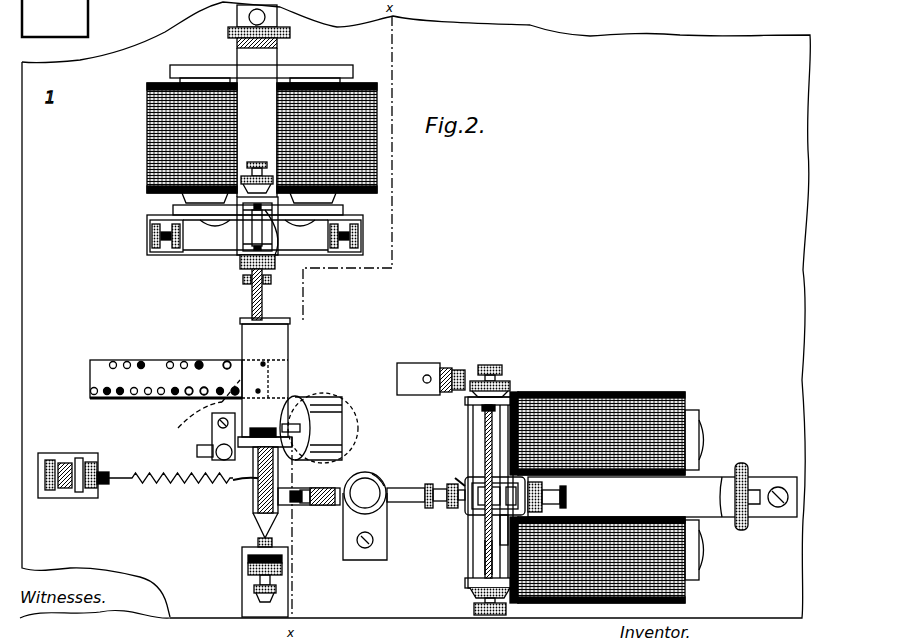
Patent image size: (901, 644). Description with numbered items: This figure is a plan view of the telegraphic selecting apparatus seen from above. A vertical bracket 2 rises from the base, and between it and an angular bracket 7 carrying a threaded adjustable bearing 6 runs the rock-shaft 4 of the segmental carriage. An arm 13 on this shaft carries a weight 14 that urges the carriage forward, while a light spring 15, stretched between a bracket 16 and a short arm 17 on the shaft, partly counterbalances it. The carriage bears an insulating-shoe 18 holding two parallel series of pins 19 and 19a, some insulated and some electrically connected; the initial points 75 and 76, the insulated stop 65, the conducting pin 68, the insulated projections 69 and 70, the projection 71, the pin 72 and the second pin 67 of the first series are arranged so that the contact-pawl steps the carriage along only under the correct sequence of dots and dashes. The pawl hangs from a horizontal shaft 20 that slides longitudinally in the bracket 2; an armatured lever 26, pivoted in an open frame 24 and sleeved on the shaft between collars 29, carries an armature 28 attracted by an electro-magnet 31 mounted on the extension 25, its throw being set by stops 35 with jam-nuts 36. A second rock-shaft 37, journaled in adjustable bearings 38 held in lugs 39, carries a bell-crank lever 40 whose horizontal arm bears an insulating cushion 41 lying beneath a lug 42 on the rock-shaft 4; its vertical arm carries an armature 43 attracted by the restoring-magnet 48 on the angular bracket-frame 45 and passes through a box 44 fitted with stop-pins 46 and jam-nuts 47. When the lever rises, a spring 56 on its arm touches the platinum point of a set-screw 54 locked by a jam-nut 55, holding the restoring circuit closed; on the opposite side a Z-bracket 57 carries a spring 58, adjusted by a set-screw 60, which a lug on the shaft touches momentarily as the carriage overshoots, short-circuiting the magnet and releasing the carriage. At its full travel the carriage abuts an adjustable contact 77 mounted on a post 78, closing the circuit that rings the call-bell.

The vertical bracket 2 is at (290, 332).
The rock-shaft 4 is at (253, 505).
The threaded adjustable bearing 6 is at (258, 542).
The angular bracket 7 is at (242, 563).
The arm 13 is at (293, 419).
The weight 14 is at (319, 428).
The spring 15 is at (171, 469).
The bracket 16 is at (73, 468).
The short arm 17 is at (252, 482).
The insulating-shoe 18 is at (166, 379).
The series of pins 19 is at (90, 392).
The series of pins 19a is at (100, 365).
The horizontal shaft 20 is at (252, 305).
The open frame 24 is at (237, 255).
The extension 25 is at (259, 101).
The armatured lever 26 is at (243, 232).
The armature 28 is at (343, 212).
The collars 29 is at (276, 255).
The electro-magnet 31 is at (147, 143).
The stops 35 is at (256, 162).
The jam-nuts 36 is at (245, 268).
The rock-shaft 37 is at (485, 455).
The adjustable bearings 38 is at (458, 602).
The brackets or lugs 39 is at (512, 400).
The bell-crank lever 40 is at (414, 503).
The insulating cushion 41 is at (312, 505).
The arm or lug 42 is at (300, 490).
The armature 43 is at (505, 553).
The box or open frame 44 is at (470, 528).
The angular bracket-frame 45 is at (662, 496).
The stop-pins 46 is at (555, 497).
The jam-nuts 47 is at (452, 475).
The electro-magnet 48 is at (607, 487).
The set-screw 54 is at (365, 516).
The jam-nut 55 is at (380, 482).
The spring 56 is at (404, 489).
The Z-bracket 57 is at (212, 429).
The spring 58 is at (197, 449).
The set-screw 60 is at (216, 457).
The pin or stop 65 is at (243, 358).
The second pin 67 is at (234, 383).
The third pin 68 is at (227, 361).
The insulated stop or projection 69 is at (197, 412).
The fourth insulated point 70 is at (199, 361).
The fifth projection 71 is at (186, 384).
The electrically-connected pin 72 is at (206, 384).
The initial point or projection 75 is at (272, 369).
The initial point or projection 76 is at (268, 393).
The adjustable contact 77 is at (427, 375).
The post 78 is at (397, 376).